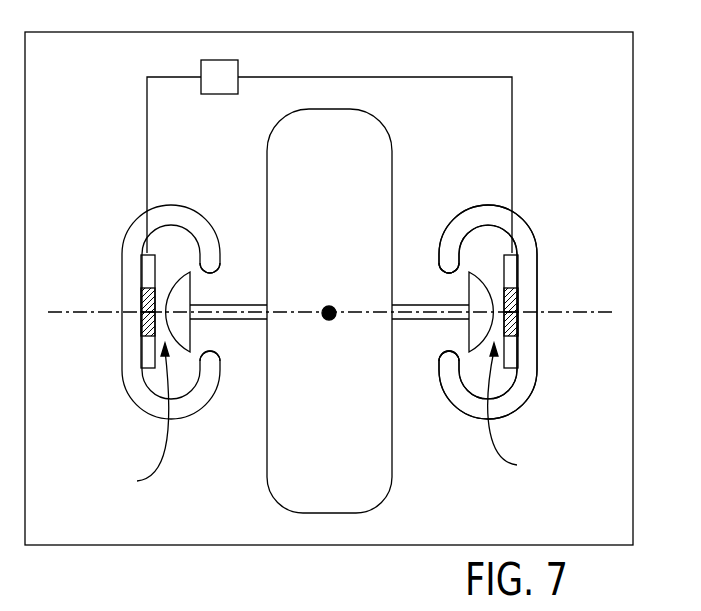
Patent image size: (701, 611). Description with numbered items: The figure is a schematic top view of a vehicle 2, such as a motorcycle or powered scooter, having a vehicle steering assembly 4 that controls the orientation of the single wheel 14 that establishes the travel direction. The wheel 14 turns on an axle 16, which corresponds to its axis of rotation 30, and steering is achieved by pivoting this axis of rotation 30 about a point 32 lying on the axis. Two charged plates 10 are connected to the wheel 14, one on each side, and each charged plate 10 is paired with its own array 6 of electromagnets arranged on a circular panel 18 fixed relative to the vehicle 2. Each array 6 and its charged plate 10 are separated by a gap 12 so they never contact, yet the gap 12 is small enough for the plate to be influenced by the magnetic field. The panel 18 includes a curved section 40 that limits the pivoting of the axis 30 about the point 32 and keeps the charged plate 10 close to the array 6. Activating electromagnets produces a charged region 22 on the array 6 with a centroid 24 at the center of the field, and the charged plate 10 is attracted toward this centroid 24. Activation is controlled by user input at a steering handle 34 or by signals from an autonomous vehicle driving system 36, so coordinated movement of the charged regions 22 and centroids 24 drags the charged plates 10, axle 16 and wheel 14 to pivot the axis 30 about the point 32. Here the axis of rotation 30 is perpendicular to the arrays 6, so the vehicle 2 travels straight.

The vehicle 2 is at (633, 187).
The vehicle steering assembly 4 is at (565, 451).
The array of electromagnets 6 is at (142, 273).
The charged plate 10 is at (177, 280).
The gap 12 is at (330, 418).
The wheel 14 is at (348, 497).
The axle 16 is at (240, 305).
The panel 18 is at (137, 395).
The charged region 22 is at (142, 297).
The centroid 24 is at (142, 322).
The axis of rotation 30 is at (66, 312).
The point 32 is at (344, 301).
The steering handle 34 is at (306, 145).
The autonomous vehicle driving system 36 is at (217, 60).
The curved section 40 is at (207, 235).